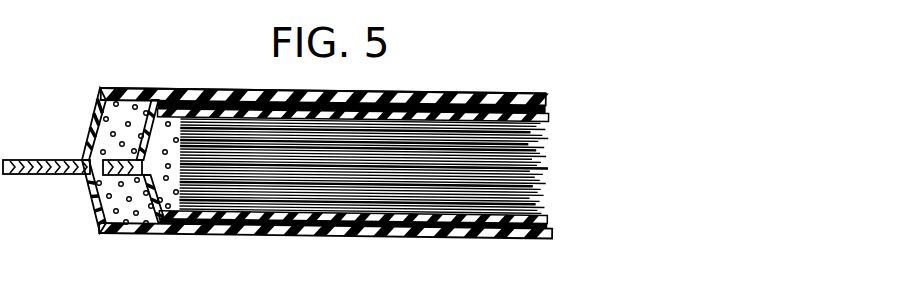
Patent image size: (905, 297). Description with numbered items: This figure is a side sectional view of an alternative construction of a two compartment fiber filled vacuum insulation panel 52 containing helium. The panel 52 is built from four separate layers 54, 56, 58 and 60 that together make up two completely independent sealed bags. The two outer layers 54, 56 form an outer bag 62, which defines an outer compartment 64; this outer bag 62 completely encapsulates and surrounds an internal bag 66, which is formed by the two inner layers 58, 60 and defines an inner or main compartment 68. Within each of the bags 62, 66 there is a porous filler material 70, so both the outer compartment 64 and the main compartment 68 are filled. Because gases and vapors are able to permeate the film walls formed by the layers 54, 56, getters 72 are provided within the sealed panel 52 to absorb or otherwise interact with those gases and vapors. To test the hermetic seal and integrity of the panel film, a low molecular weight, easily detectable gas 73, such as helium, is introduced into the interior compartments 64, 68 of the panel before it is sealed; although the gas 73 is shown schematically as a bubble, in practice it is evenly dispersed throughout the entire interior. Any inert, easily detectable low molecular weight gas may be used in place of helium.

The vacuum insulation panel 52 is at (160, 84).
The layer 54 is at (111, 89).
The layer 56 is at (128, 234).
The layer 58 is at (199, 104).
The layer 60 is at (232, 229).
The outer bag 62 is at (91, 137).
The outer compartment 64 is at (114, 127).
The internal bag 66 is at (103, 226).
The inner or main compartment 68 is at (173, 190).
The porous filler material 70 is at (507, 93).
The getters 72 is at (166, 168).
The gas 73 is at (369, 160).